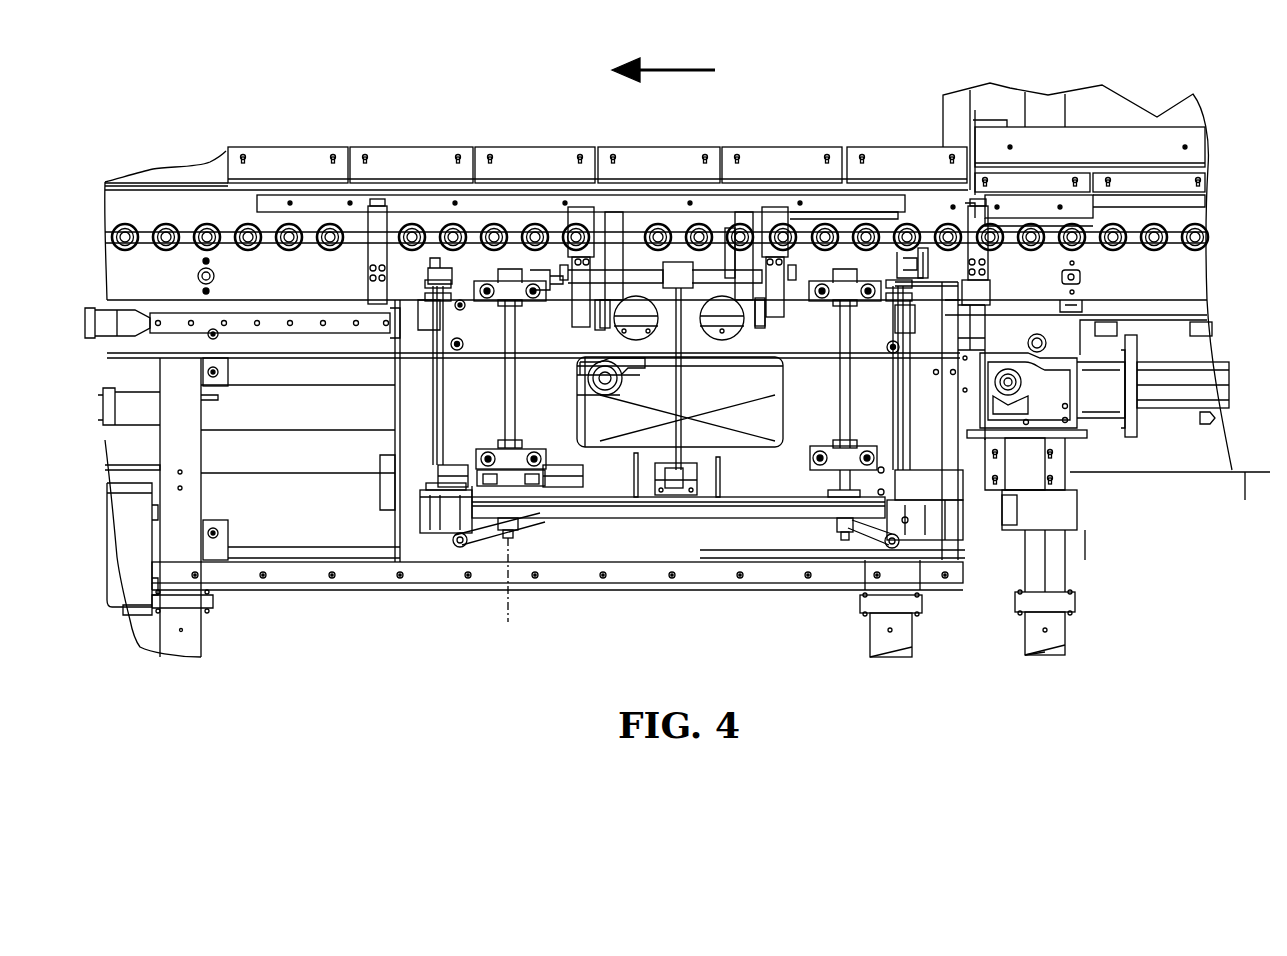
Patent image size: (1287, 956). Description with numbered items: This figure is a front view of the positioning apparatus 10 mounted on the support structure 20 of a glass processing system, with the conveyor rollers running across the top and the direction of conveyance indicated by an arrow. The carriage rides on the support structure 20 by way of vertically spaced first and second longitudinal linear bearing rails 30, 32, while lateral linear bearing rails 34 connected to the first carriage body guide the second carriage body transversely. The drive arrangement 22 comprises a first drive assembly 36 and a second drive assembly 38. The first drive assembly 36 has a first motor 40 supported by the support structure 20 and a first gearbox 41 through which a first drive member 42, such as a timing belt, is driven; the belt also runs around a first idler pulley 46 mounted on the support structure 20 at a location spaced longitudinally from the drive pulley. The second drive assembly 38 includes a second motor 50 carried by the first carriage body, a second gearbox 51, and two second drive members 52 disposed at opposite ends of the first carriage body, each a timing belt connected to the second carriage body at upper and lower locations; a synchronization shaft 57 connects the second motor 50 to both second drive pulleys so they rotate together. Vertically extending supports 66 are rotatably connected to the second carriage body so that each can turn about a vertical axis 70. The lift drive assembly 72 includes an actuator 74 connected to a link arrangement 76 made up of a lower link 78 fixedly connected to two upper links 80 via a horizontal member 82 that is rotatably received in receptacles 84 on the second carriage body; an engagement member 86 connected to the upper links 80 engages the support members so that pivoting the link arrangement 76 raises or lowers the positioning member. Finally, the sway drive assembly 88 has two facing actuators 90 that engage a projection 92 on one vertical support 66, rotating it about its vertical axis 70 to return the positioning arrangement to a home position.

The positioning apparatus 10 is at (1133, 552).
The support structure 20 is at (1063, 653).
The drive arrangement 22 is at (1200, 348).
The first longitudinal linear bearing rail 30 is at (277, 322).
The second longitudinal linear bearing rail 32 is at (376, 583).
The lateral linear bearing rail 34 is at (915, 276).
The first drive assembly 36 is at (1130, 440).
The second drive assembly 38 is at (1082, 540).
The first motor 40 is at (1175, 332).
The first gearbox 41 is at (1113, 328).
The first drive member 42 is at (983, 305).
The first idler pulley 46 is at (598, 398).
The second motor 50 is at (1045, 540).
The second gearbox 51 is at (988, 530).
The second drive member 52 is at (438, 415).
The synchronization shaft 57 is at (777, 520).
The vertically extending support 66 is at (498, 365).
The vertical axis 70 is at (498, 622).
The lift drive assembly 72 is at (707, 478).
The actuator 74 is at (690, 495).
The link arrangement 76 is at (672, 328).
The lower link 78 is at (688, 262).
The upper link 80 is at (555, 215).
The horizontal member 82 is at (640, 265).
The receptacle 84 is at (565, 300).
The engagement member 86 is at (765, 215).
The sway drive assembly 88 is at (553, 507).
The actuator 90 is at (462, 465).
The projection 92 is at (540, 525).